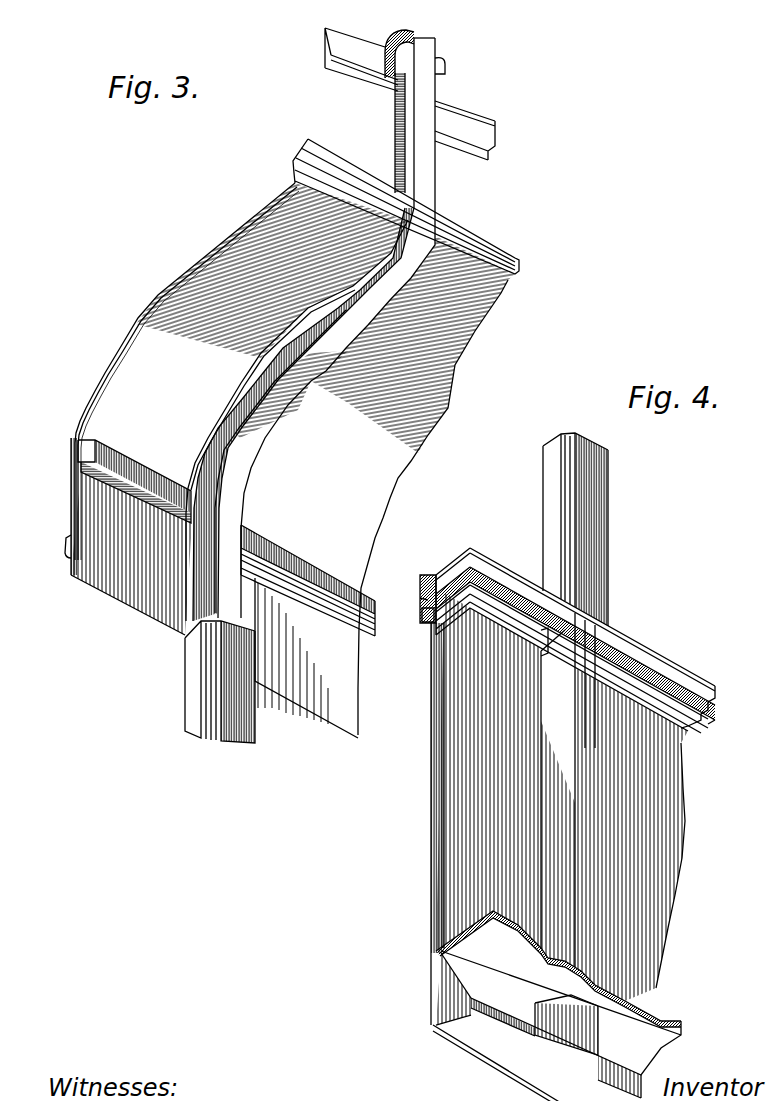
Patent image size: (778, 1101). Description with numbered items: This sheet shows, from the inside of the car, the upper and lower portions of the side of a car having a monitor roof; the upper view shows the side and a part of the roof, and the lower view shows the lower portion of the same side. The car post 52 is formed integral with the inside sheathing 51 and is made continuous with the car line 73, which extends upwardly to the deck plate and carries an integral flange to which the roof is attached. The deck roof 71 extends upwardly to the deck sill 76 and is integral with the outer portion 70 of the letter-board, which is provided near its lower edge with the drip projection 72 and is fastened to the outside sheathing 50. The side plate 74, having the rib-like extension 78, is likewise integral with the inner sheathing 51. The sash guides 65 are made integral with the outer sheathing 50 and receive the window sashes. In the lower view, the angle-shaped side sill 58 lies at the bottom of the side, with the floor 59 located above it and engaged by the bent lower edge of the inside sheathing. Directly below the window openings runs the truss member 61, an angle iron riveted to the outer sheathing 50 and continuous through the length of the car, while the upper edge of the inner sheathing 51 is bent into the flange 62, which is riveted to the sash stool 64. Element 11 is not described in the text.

In FIG. 3, the curved channel 11 is at (344, 324).
In FIG. 3, the sash guides 65 is at (196, 715).
In FIG. 4, the sash guides 65 is at (549, 440).
In FIG. 3, the outer portion of the letter-board 70 is at (63, 510).
In FIG. 3, the deck roof 71 is at (193, 247).
In FIG. 3, the drip projection 72 is at (60, 550).
In FIG. 3, the car line 73 is at (378, 487).
In FIG. 3, the side plate 74 is at (113, 583).
In FIG. 3, the deck sill 76 is at (300, 127).
In FIG. 3, the rib-like extension 78 is at (135, 497).
In FIG. 4, the outside sheathing 50 is at (425, 833).
In FIG. 4, the inside sheathing 51 is at (433, 782).
In FIG. 4, the car post 52 is at (580, 800).
In FIG. 4, the side sill 58 is at (445, 1020).
In FIG. 4, the floor 59 is at (460, 915).
In FIG. 4, the truss member 61 is at (415, 624).
In FIG. 4, the flange 62 is at (501, 639).
In FIG. 4, the sash stool 64 is at (433, 568).